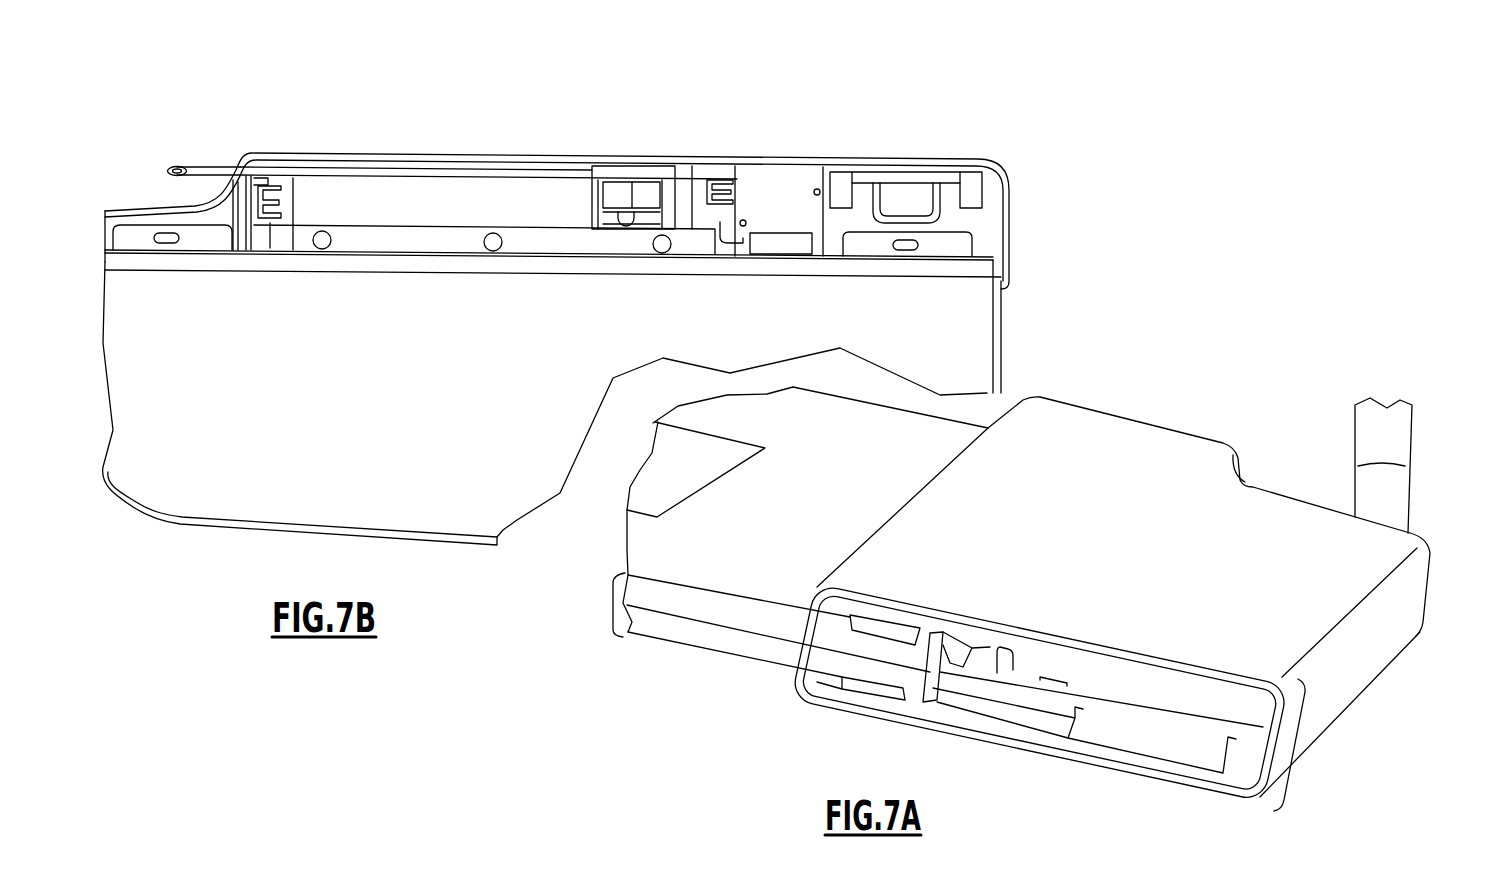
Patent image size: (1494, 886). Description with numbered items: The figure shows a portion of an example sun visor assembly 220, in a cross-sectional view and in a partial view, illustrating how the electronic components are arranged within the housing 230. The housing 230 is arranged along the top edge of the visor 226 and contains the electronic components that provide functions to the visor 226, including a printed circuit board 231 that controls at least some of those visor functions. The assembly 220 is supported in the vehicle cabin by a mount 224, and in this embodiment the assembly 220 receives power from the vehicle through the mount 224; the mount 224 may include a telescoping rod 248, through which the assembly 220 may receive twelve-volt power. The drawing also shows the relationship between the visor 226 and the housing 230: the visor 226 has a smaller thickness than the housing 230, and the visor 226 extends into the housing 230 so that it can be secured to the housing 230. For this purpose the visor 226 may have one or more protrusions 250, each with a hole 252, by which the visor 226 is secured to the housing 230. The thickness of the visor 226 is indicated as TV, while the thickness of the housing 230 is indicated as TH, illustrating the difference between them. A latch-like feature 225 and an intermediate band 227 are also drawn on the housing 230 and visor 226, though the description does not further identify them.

In FIG. 7B, the sun visor assembly 220 is at (480, 128).
In FIG. 7B, the mount 224 is at (212, 163).
In FIG. 7A, the mount 224 is at (1390, 450).
In FIG. 7B, the latch 225 is at (917, 177).
In FIG. 7B, the visor 226 is at (977, 358).
In FIG. 7A, the visor 226 is at (703, 575).
In FIG. 7A, the intermediate band of housing 227 is at (763, 622).
In FIG. 7B, the housing 230 is at (820, 162).
In FIG. 7A, the housing 230 is at (1323, 690).
In FIG. 7B, the printed circuit board 231 is at (782, 180).
In FIG. 7B, the telescoping rod 248 is at (318, 172).
In FIG. 7B, the protrusion 250 is at (198, 240).
In FIG. 7B, the hole 252 is at (168, 243).
In FIG. 7A, the hole 252 is at (860, 677).
In FIG. 7A, the vertical thickness TV is at (611, 602).
In FIG. 7A, the horizontal thickness TH is at (1290, 770).